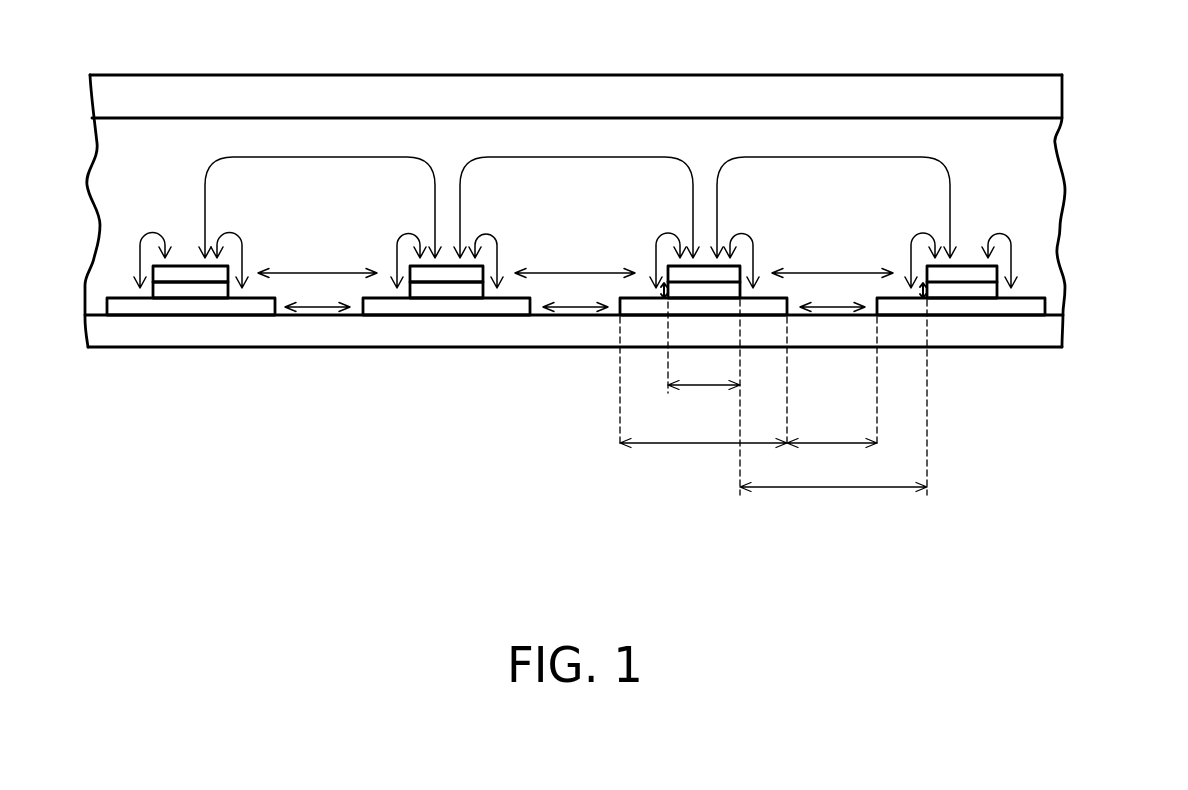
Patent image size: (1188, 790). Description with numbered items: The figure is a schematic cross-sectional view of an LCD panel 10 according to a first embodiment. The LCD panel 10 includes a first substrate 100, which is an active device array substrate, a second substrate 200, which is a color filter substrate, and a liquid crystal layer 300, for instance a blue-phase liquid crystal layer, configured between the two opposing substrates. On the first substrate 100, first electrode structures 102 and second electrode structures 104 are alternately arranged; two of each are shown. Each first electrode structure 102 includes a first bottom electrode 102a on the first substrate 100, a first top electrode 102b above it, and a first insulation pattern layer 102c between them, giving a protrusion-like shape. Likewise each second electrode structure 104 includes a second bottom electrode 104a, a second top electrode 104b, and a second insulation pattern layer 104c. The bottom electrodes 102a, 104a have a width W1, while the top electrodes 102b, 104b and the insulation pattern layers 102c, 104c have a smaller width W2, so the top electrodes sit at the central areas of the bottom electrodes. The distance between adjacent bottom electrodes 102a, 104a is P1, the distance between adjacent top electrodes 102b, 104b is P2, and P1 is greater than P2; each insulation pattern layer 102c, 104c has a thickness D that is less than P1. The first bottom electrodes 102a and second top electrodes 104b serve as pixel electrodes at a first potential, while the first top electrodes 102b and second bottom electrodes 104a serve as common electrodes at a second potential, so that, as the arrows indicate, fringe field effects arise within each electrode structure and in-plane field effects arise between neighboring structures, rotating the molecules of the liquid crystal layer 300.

The LCD panel 10 is at (631, 275).
The first substrate 100 is at (1040, 330).
The second substrate 200 is at (1040, 96).
The liquid crystal layer 300 is at (1030, 187).
The first electrode structure 102 is at (442, 374).
The first bottom electrode 102a is at (133, 307).
The first top electrode 102b is at (210, 277).
The first insulation pattern layer 102c is at (183, 290).
The second electrode structure 104 is at (701, 375).
The second bottom electrode 104a is at (390, 307).
The second top electrode 104b is at (468, 277).
The second insulation pattern layer 104c is at (440, 290).
The width of bottom electrode W1 is at (703, 426).
The width of top electrode W2 is at (704, 370).
The distance between bottom electrodes P1 is at (832, 426).
The distance between top electrodes P2 is at (833, 471).
The thickness of insulation pattern layer D is at (664, 298).